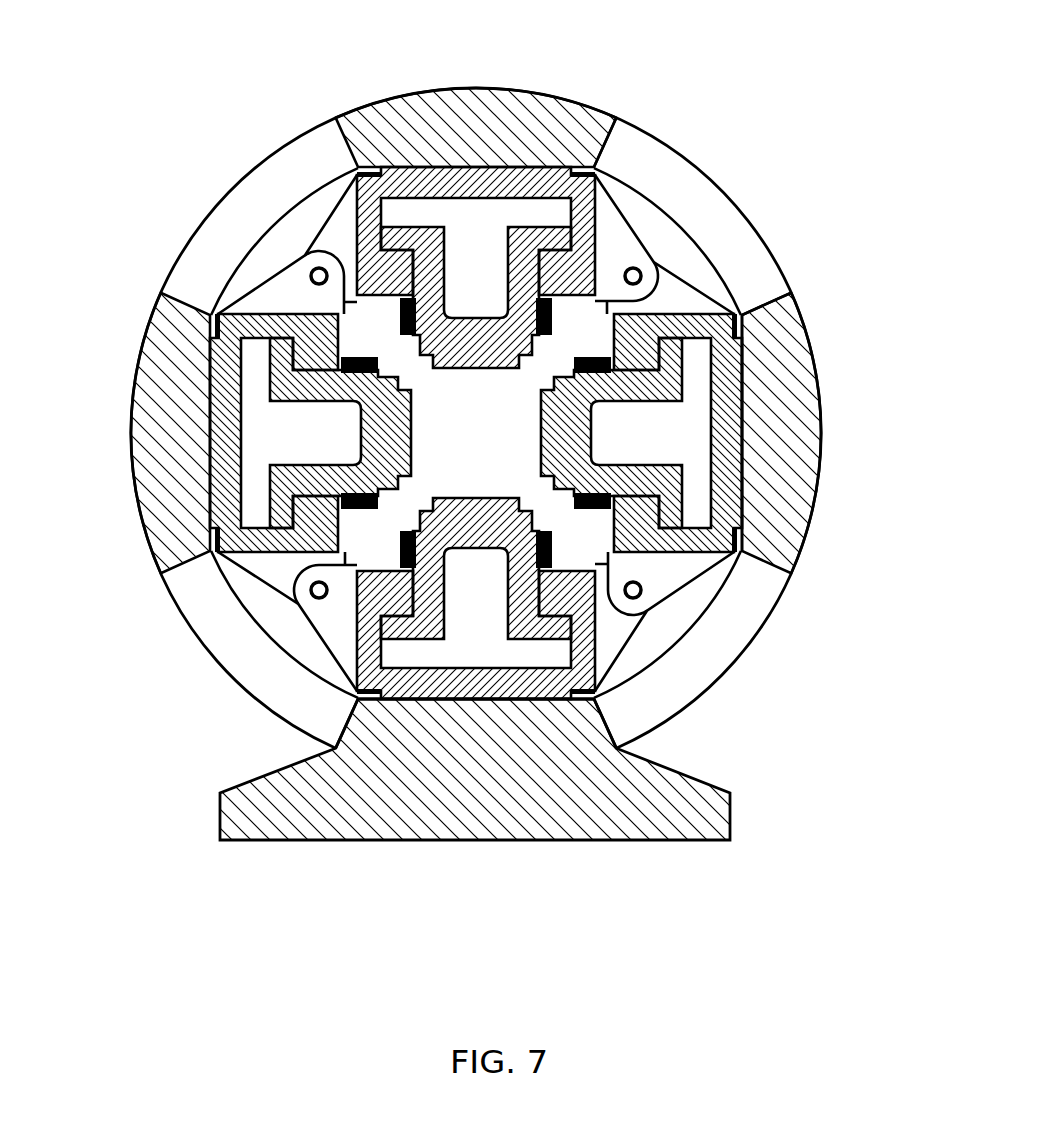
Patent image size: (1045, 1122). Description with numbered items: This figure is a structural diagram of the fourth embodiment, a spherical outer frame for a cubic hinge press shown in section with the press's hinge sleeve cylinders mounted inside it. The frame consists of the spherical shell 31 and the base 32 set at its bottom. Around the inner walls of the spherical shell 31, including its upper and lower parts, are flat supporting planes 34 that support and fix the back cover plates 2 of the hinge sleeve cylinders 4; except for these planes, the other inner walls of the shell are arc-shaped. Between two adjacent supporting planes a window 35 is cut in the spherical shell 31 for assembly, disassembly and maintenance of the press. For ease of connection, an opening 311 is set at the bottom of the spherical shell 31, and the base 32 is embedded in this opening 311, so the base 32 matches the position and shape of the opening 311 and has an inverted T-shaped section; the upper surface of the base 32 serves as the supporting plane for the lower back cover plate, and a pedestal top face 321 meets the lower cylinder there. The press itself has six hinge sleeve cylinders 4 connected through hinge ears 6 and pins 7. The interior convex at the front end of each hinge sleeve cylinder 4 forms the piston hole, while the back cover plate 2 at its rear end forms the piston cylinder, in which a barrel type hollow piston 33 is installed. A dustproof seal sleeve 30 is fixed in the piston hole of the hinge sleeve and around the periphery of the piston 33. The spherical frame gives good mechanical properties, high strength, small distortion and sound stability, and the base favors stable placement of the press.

The back cover plate 2 is at (730, 358).
The hinge sleeve cylinder 4 is at (727, 290).
The hinge ear 6 is at (332, 238).
The pin 7 is at (316, 267).
The dustproof seal sleeve 30 is at (720, 563).
The spherical shell 31 is at (688, 197).
The opening 311 is at (338, 722).
The base 32 is at (683, 803).
The pedestal top face 321 is at (457, 707).
The barrel type hollow piston 33 is at (680, 482).
The supporting plane 34 is at (743, 397).
The window 35 is at (697, 270).